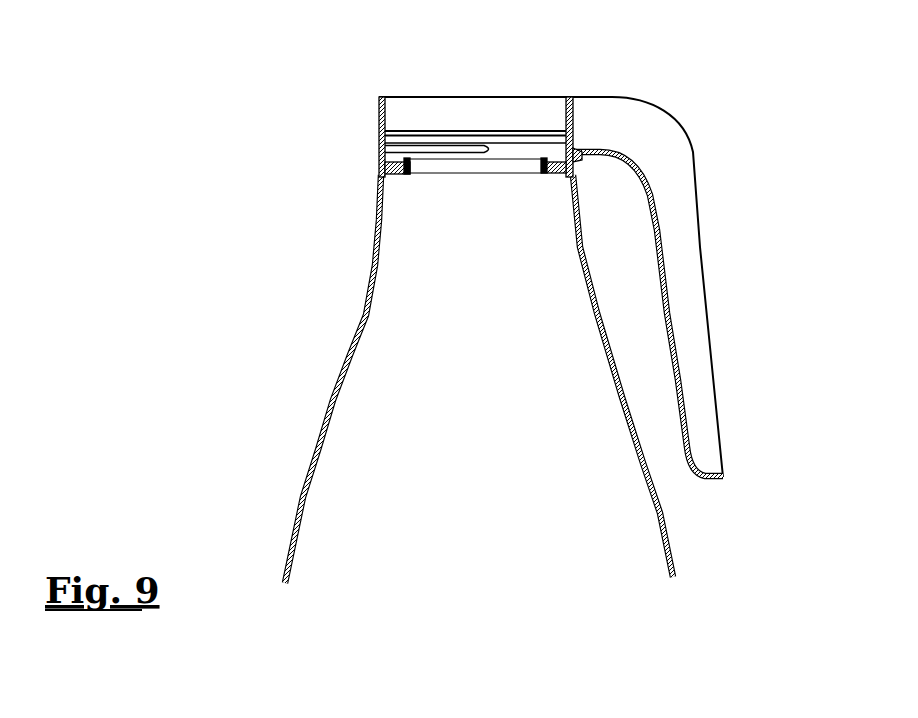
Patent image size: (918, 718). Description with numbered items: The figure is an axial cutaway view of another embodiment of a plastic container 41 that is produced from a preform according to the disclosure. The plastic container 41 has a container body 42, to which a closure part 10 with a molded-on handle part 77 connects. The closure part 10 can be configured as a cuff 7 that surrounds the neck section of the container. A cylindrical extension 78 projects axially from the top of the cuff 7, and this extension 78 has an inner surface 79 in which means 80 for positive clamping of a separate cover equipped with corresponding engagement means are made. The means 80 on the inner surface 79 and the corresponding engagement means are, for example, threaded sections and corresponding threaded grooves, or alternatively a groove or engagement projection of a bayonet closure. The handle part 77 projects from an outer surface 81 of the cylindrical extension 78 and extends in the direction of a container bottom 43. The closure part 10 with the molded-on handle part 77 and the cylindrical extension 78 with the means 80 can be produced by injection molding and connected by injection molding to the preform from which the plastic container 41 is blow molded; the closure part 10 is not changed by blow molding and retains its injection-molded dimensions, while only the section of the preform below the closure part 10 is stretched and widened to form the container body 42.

The cuff 7 is at (380, 182).
The closure part 10 is at (722, 118).
The plastic container 41 is at (163, 381).
The container body 42 is at (298, 495).
The container bottom 43 is at (136, 20).
The handle part 77 is at (686, 250).
The cylindrical extension 78 is at (379, 143).
The inner surface 79 is at (528, 122).
The means for positive clamping 80 is at (440, 128).
The outer surface 81 is at (578, 125).